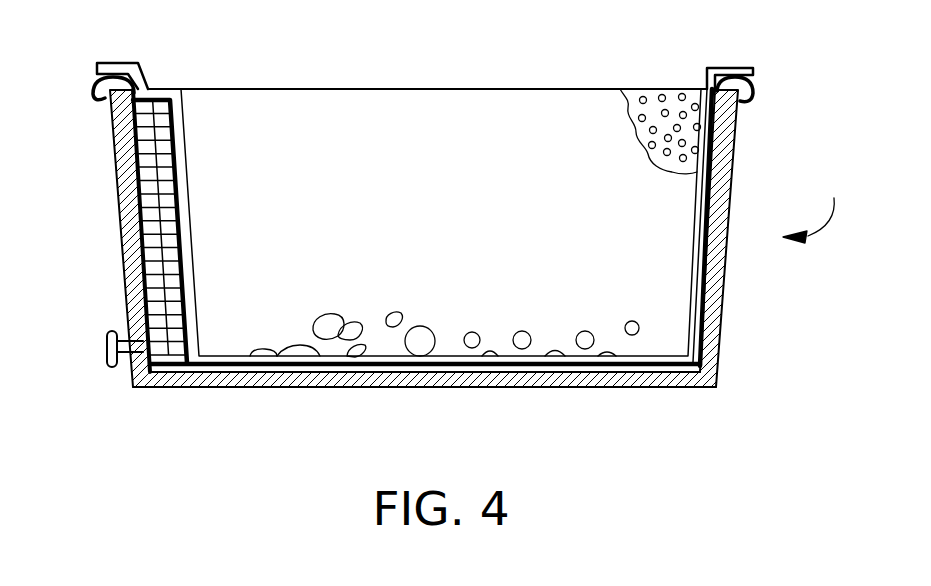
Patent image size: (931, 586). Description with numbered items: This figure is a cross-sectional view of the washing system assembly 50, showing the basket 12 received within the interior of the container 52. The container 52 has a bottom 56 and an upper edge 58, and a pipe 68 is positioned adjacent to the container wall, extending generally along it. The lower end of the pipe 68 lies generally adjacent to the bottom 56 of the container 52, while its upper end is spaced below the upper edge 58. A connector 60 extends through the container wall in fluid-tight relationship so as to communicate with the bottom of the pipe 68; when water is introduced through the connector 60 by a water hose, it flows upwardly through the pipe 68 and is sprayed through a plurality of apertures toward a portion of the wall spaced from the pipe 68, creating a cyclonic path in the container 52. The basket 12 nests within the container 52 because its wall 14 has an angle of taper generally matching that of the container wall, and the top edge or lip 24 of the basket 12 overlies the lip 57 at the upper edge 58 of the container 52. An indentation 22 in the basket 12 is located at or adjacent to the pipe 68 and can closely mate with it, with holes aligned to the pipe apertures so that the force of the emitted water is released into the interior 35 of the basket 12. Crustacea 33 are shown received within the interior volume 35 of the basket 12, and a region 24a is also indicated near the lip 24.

The basket 12 is at (178, 126).
The wall of the basket 14 is at (121, 171).
The indentation 22 is at (184, 190).
The top edge or lip of the basket 24 is at (97, 67).
The perforated/foam region 24a is at (671, 104).
The crustacea 33 is at (445, 310).
The interior volume of the basket 35 is at (406, 199).
The assembly 50 is at (815, 208).
The container 52 is at (724, 295).
The bottom of the container 56 is at (622, 388).
The lip of the container 57 is at (753, 83).
The upper edge of the container 58 is at (405, 87).
The connector 60 is at (112, 368).
The pipe 68 is at (153, 245).